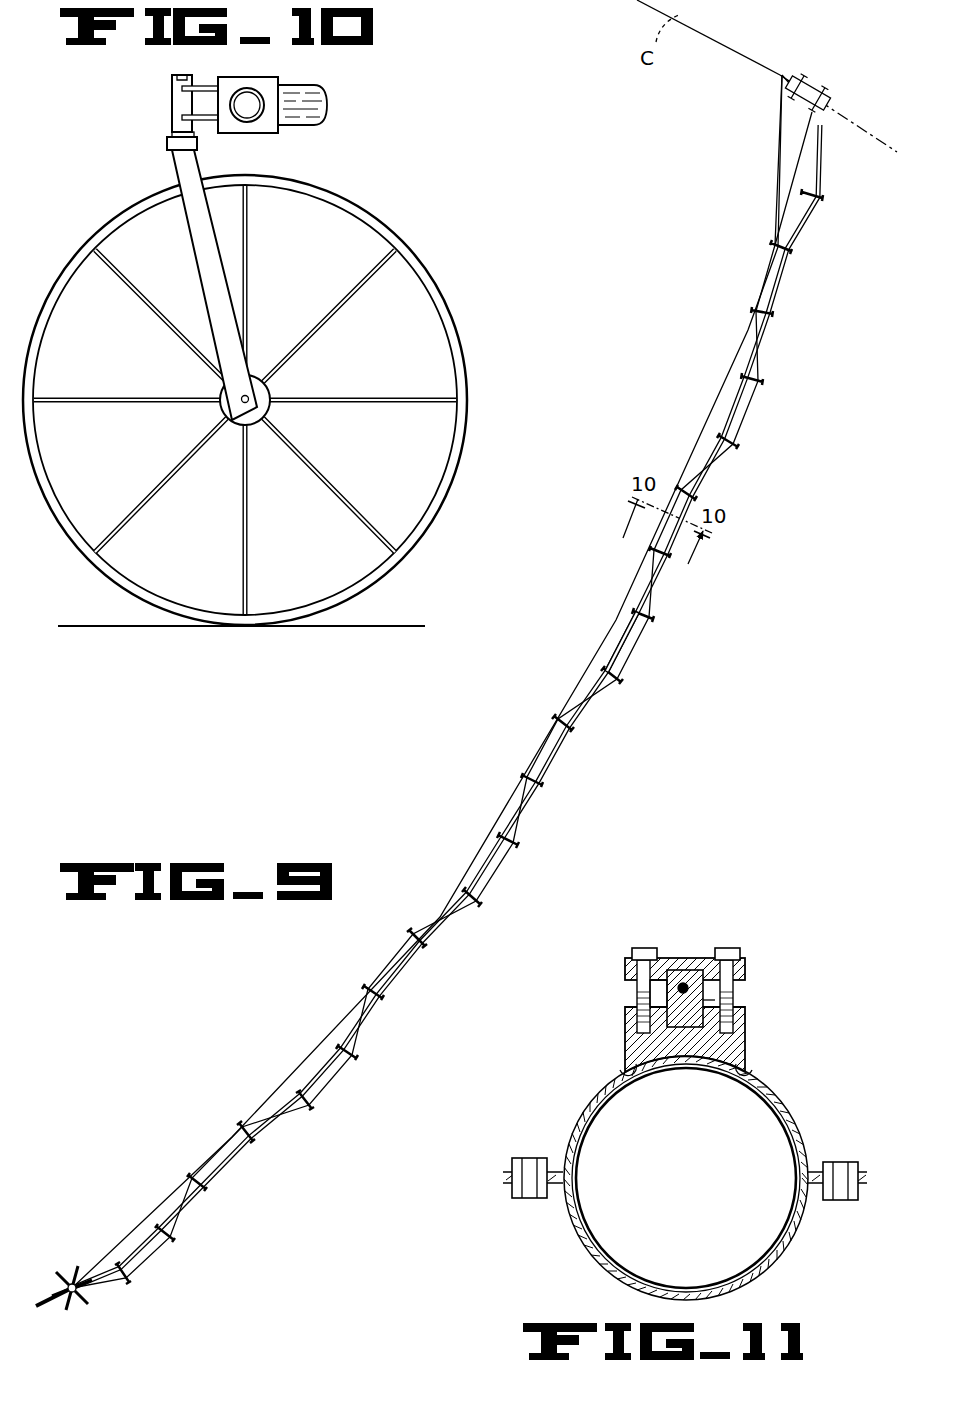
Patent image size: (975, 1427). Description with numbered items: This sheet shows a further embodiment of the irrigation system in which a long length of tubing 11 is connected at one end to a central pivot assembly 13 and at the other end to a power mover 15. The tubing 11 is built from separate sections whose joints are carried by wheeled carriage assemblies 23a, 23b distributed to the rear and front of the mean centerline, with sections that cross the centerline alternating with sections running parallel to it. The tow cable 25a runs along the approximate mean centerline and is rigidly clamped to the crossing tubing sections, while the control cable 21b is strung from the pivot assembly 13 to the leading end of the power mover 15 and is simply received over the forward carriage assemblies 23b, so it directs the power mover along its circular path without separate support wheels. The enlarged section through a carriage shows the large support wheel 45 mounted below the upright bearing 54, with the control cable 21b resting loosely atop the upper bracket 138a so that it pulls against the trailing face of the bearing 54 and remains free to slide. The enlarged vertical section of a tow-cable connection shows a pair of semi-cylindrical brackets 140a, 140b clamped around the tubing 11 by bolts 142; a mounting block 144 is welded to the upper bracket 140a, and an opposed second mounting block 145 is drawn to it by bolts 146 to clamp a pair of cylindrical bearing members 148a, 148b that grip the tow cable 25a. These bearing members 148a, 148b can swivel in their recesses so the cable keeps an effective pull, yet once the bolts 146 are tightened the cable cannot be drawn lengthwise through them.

In FIG. 10, the irrigation tubing 11 is at (336, 107).
In FIG. 9, the irrigation tubing 11 is at (822, 178).
In FIG. 11, the irrigation tubing 11 is at (566, 1212).
In FIG. 9, the central pivot assembly 13 is at (70, 1279).
In FIG. 9, the power mover 15 is at (816, 85).
In FIG. 10, the control cable 21b is at (195, 81).
In FIG. 9, the control cable 21b is at (603, 640).
In FIG. 9, the carriage assembly 23a is at (782, 314).
In FIG. 10, the carriage assembly 23b is at (352, 188).
In FIG. 9, the carriage assembly 23b is at (679, 484).
In FIG. 9, the tow cable 25a is at (634, 615).
In FIG. 11, the tow cable 25a is at (650, 1000).
In FIG. 10, the support wheel 45 is at (154, 192).
In FIG. 9, the support wheel 45 is at (752, 309).
In FIG. 10, the bearing 54 is at (177, 106).
In FIG. 10, the upper bracket 138a is at (182, 88).
In FIG. 11, the upper semi-cylindrical bracket 140a is at (593, 1099).
In FIG. 11, the lower semi-cylindrical bracket 140b is at (598, 1255).
In FIG. 11, the bolts 142 is at (530, 1160).
In FIG. 11, the mounting block 144 is at (625, 1044).
In FIG. 11, the second mounting block 145 is at (745, 964).
In FIG. 11, the bolts 146 is at (718, 948).
In FIG. 11, the bearing member 148a is at (703, 984).
In FIG. 11, the bearing member 148b is at (715, 1000).